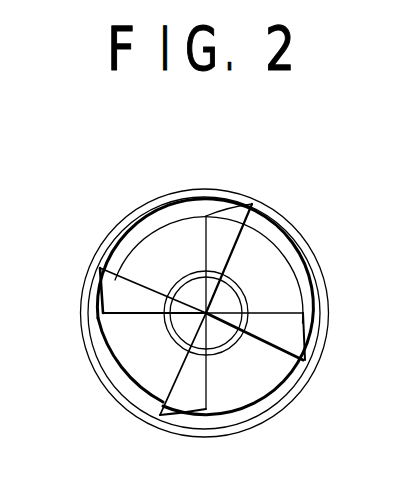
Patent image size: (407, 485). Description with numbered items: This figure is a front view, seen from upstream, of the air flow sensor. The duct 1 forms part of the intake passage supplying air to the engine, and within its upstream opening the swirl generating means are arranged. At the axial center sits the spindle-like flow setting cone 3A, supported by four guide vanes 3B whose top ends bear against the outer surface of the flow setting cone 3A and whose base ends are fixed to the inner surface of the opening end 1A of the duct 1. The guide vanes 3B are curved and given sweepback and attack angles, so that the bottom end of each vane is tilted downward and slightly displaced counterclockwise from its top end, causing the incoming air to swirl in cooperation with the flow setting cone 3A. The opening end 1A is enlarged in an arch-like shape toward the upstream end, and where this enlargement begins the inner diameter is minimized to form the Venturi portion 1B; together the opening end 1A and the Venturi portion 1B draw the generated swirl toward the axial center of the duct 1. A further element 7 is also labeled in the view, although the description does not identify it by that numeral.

The duct 1 is at (310, 240).
The opening end 1A is at (312, 288).
The Venturi portion 1B is at (250, 379).
The flow setting cone 3A is at (192, 288).
The guide vanes 3B is at (230, 222).
The clearance 7 is at (290, 257).